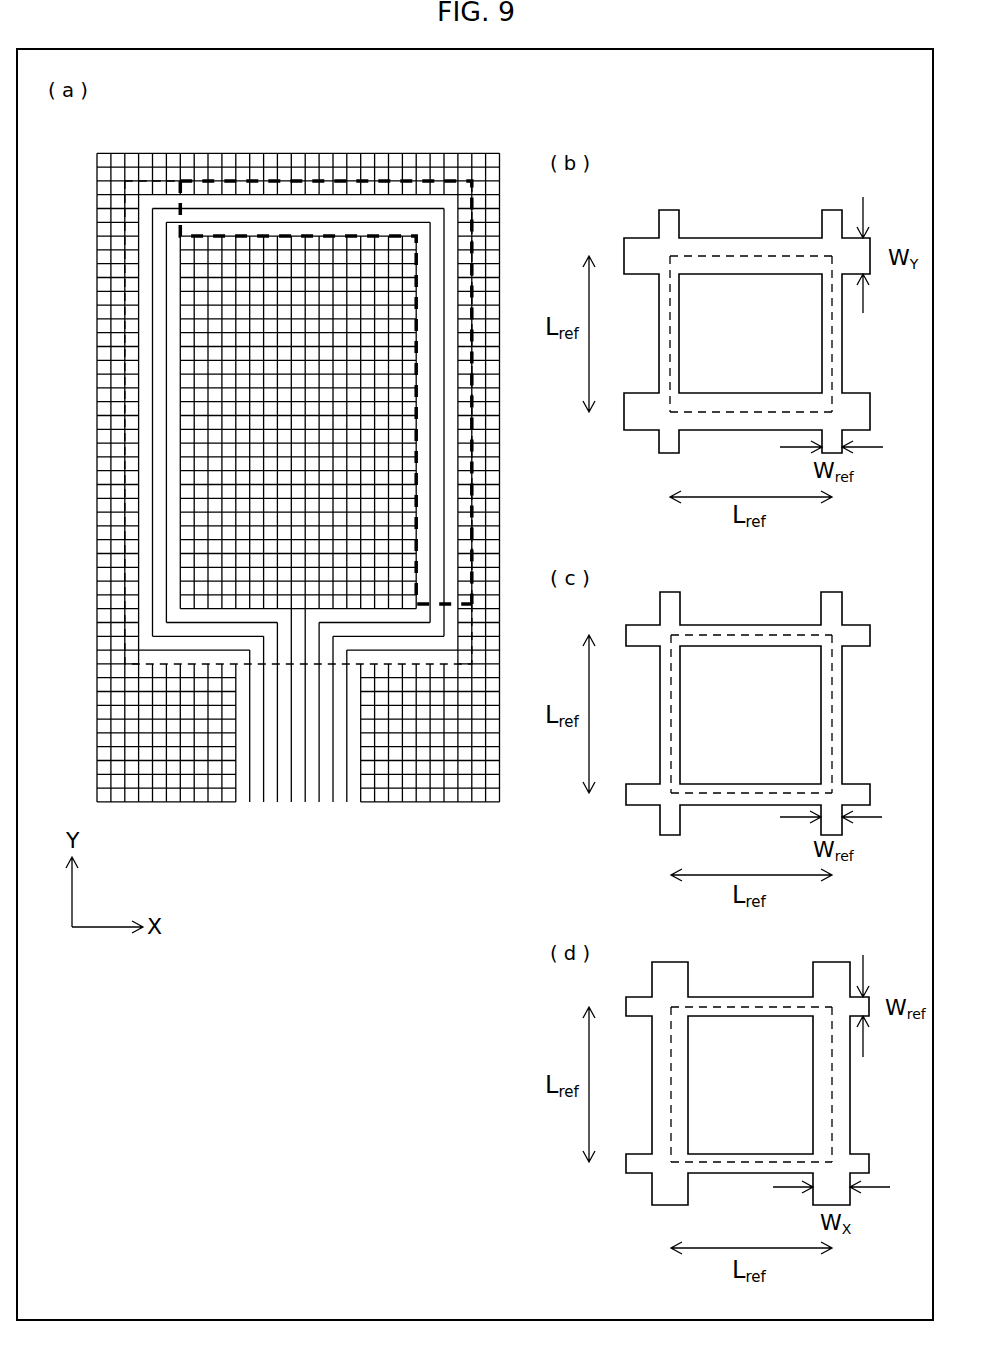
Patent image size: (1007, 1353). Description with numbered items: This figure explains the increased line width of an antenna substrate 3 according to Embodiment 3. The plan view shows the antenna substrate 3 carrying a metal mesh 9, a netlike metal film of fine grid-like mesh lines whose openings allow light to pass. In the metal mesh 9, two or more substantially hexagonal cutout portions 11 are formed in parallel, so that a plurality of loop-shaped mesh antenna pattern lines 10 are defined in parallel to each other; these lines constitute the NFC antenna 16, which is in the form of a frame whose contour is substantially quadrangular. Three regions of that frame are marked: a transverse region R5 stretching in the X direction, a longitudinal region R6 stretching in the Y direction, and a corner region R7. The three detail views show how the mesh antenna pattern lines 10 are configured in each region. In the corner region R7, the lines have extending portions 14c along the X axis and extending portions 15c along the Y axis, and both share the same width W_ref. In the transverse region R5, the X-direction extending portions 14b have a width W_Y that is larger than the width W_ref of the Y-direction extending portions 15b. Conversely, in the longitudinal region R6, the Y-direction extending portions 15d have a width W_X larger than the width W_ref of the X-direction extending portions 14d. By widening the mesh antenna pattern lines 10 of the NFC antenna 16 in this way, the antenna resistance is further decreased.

The antenna substrate 3 is at (275, 151).
The metal mesh 9 is at (283, 532).
The mesh antenna pattern lines 10 is at (138, 242).
The cutout portions 11 is at (144, 435).
The NFC antenna 16 is at (133, 215).
The extending portions (first extending portions) 14b is at (778, 245).
The extending portions (second extending portions) 15b is at (678, 324).
The extending portions 14c is at (778, 630).
The extending portions 15c is at (679, 710).
The extending portions (second extending portions) 14d is at (778, 1000).
The extending portions (first extending portions) 15d is at (673, 1080).
The transverse region R5 is at (172, 210).
The longitudinal region R6 is at (476, 359).
The corner region R7 is at (452, 172).